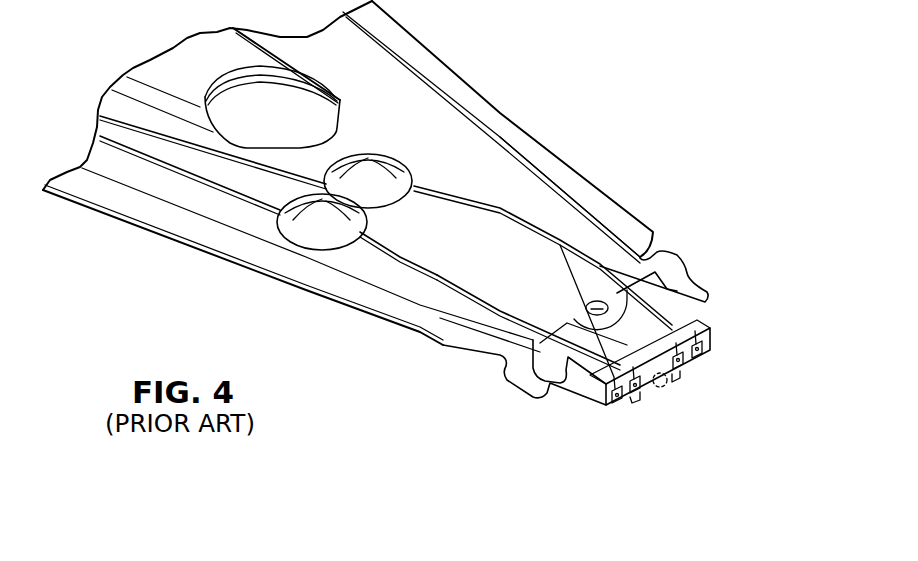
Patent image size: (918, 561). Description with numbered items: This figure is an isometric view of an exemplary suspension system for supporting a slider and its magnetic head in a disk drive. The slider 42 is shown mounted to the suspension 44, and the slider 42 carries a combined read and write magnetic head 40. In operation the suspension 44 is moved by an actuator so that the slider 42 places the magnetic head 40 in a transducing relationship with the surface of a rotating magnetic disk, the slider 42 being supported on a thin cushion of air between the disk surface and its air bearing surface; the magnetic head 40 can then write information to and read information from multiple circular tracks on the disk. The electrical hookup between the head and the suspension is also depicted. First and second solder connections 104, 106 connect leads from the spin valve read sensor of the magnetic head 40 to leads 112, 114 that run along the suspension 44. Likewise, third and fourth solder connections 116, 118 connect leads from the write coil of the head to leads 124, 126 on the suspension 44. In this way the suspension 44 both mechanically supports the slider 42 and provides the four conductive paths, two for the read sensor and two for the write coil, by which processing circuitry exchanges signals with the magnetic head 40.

The magnetic head 40 is at (675, 392).
The slider 42 is at (557, 405).
The suspension 44 is at (517, 113).
The first solder connection 104 is at (610, 400).
The second solder connection 106 is at (703, 348).
The lead 112 is at (388, 260).
The lead 114 is at (570, 245).
The third solder connection 116 is at (634, 392).
The fourth solder connection 118 is at (683, 360).
The lead 124 is at (437, 273).
The lead 126 is at (492, 213).